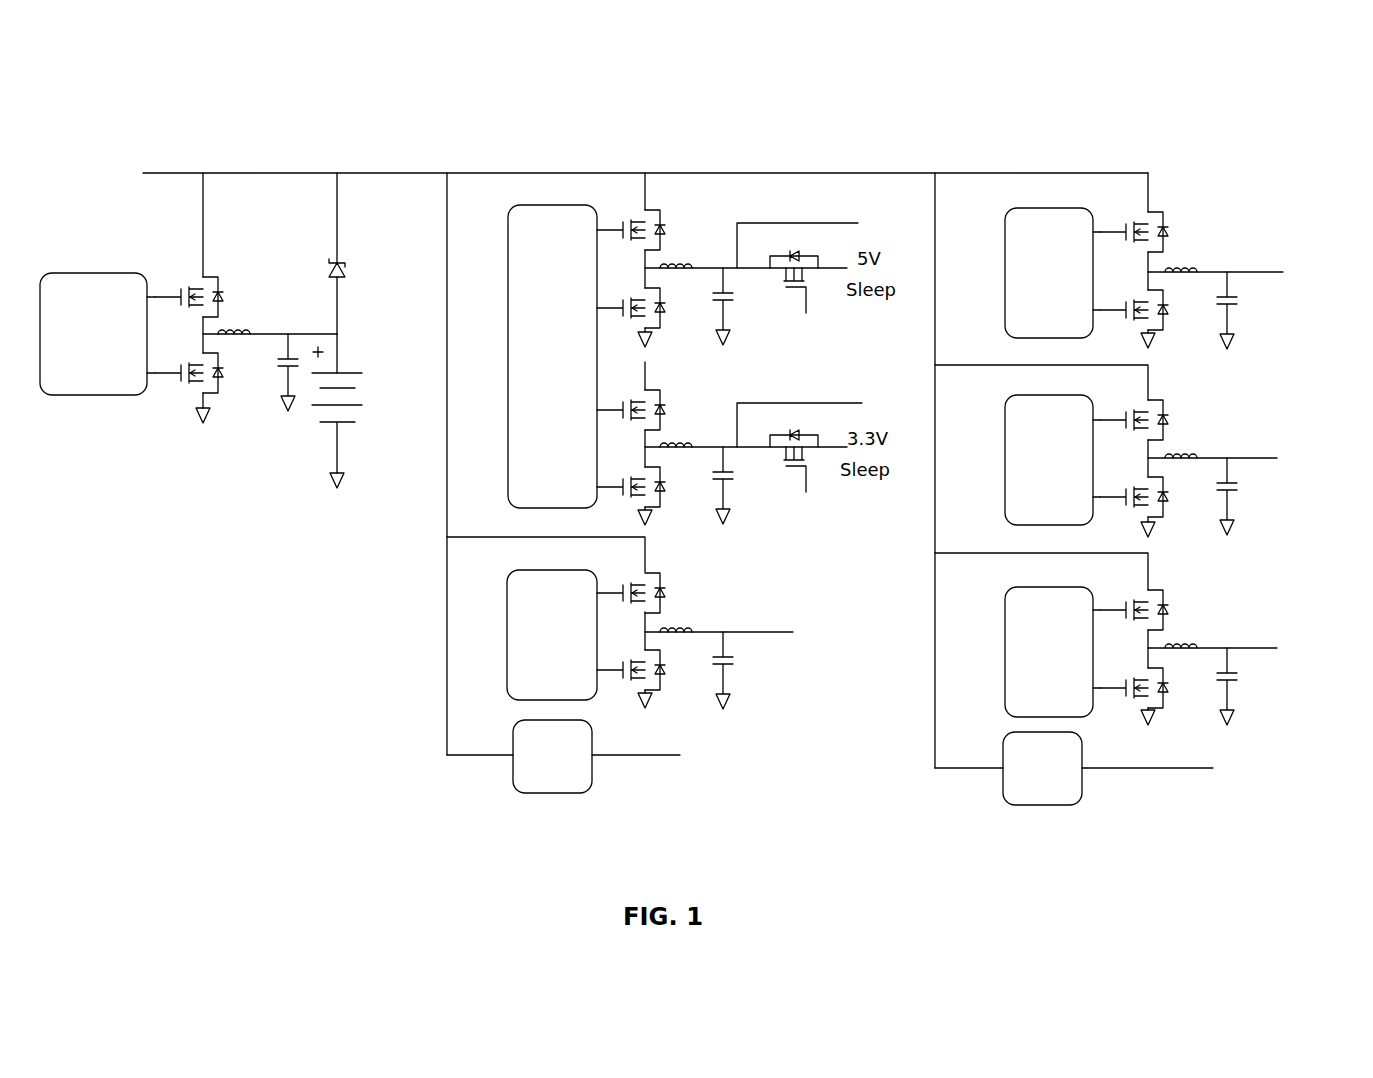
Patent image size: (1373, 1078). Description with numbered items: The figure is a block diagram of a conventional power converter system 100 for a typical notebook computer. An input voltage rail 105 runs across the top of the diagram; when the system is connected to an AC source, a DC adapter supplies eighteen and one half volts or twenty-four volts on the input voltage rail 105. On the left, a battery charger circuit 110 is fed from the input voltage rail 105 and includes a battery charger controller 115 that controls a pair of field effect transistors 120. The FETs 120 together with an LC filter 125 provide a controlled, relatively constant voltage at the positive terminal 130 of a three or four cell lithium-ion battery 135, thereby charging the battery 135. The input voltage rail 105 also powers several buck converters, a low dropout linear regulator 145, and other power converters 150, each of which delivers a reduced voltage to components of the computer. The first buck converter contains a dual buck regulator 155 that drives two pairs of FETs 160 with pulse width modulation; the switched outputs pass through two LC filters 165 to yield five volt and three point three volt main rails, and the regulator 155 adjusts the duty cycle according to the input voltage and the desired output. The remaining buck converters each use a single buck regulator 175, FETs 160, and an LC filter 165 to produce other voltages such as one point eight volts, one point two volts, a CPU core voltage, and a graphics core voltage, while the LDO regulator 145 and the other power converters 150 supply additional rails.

The power converter system 100 is at (112, 106).
The input voltage rail 105 is at (578, 172).
The battery charger circuit 110 is at (130, 488).
The battery charger controller 115 is at (93, 272).
The field effect transistors 120 is at (205, 279).
The LC filter 125 is at (314, 326).
The positive terminal 130 is at (340, 349).
The lithium-ion battery 135 is at (362, 399).
The low dropout linear regulator 145 is at (553, 795).
The other power converter 150 is at (1043, 807).
The dual buck regulator 155 is at (555, 510).
The FETs 160 is at (660, 213).
The LC filter 165 is at (716, 252).
The buck regulator 175 is at (553, 571).